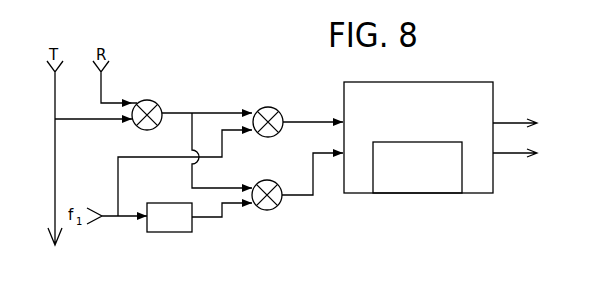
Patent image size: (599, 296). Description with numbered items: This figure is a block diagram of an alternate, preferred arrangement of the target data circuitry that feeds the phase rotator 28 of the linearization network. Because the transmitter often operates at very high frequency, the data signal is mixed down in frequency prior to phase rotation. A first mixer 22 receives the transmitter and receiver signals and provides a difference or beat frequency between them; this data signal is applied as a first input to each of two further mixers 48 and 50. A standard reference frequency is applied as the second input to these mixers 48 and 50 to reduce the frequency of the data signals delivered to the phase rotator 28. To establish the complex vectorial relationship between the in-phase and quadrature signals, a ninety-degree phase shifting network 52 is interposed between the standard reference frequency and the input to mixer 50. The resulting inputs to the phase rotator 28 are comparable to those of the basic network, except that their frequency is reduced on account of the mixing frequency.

The first mixer 22 is at (148, 100).
The mixer 48 is at (270, 107).
The mixer 50 is at (267, 181).
The 90° phase shifting network 52 is at (194, 229).
The phase rotator 28 is at (458, 92).